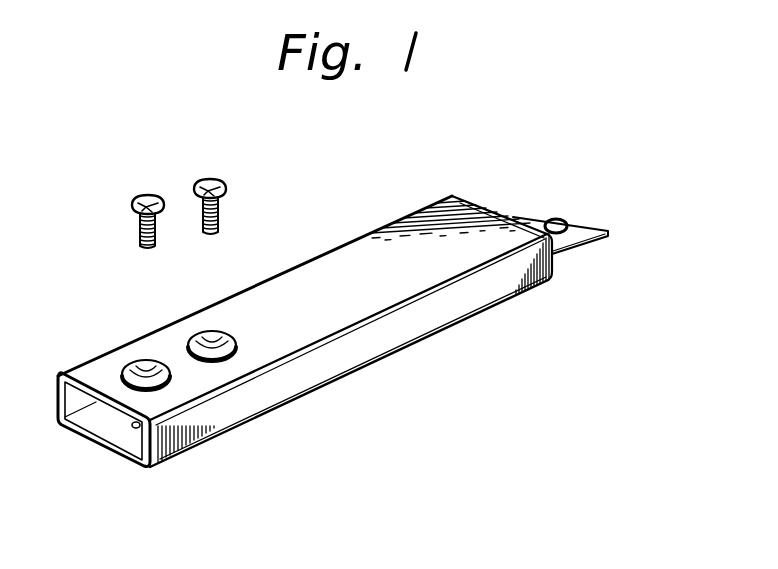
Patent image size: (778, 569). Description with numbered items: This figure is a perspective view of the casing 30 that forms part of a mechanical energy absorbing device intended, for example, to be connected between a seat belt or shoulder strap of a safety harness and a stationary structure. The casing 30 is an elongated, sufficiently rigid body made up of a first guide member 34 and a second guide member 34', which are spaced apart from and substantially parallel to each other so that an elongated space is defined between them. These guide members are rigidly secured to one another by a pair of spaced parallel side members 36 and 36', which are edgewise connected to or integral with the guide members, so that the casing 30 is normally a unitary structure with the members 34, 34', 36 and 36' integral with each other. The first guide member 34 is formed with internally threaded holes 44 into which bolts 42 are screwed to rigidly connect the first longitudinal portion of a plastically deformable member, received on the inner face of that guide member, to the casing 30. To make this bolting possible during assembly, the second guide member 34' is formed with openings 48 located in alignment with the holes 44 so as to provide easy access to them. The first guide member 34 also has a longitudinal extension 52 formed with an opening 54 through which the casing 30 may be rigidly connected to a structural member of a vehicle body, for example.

The casing 30 is at (432, 389).
The first guide member 34 is at (315, 399).
The second guide member 34' is at (289, 329).
The side member 36 is at (76, 407).
The side member 36' is at (353, 355).
The bolts 42 is at (207, 181).
The internally threaded holes 44 is at (139, 430).
The openings 48 is at (136, 364).
The longitudinal extension 52 is at (580, 241).
The opening 54 is at (546, 220).